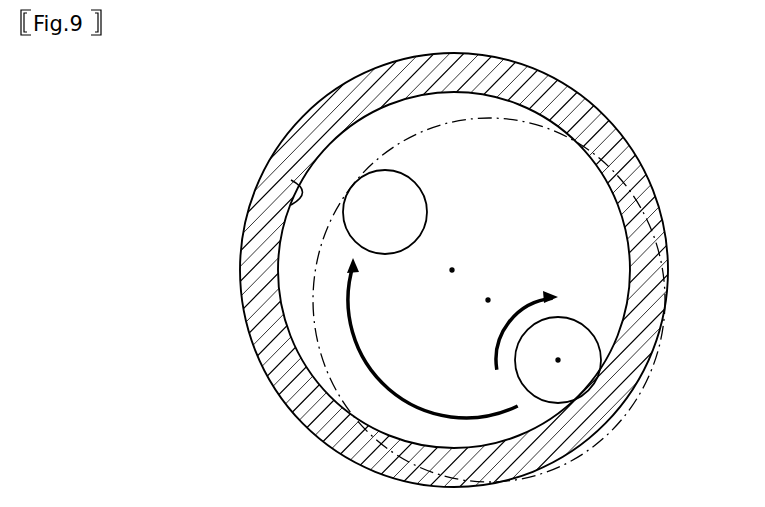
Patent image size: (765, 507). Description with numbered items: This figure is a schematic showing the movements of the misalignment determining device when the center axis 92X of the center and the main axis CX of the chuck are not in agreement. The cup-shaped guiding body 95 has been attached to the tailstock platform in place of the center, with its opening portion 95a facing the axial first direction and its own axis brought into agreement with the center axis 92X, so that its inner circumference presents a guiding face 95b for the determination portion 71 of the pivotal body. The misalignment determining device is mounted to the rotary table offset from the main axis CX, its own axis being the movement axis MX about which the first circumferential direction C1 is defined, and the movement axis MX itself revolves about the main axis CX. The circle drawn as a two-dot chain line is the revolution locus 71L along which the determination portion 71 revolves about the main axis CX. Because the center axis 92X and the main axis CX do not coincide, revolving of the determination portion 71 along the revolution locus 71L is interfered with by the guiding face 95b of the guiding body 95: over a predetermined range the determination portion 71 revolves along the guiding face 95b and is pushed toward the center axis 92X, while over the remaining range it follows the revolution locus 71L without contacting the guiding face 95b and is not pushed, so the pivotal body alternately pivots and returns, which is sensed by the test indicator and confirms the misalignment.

The guiding body 95 is at (617, 129).
The opening portion 95a is at (478, 167).
The guiding face 95b is at (291, 199).
The determination portion 71 is at (398, 172).
The revolution locus 71L is at (313, 297).
The center axis 92X is at (452, 270).
The main axis CX is at (488, 300).
The movement axis MX is at (558, 360).
The first circumferential direction C1 is at (500, 342).